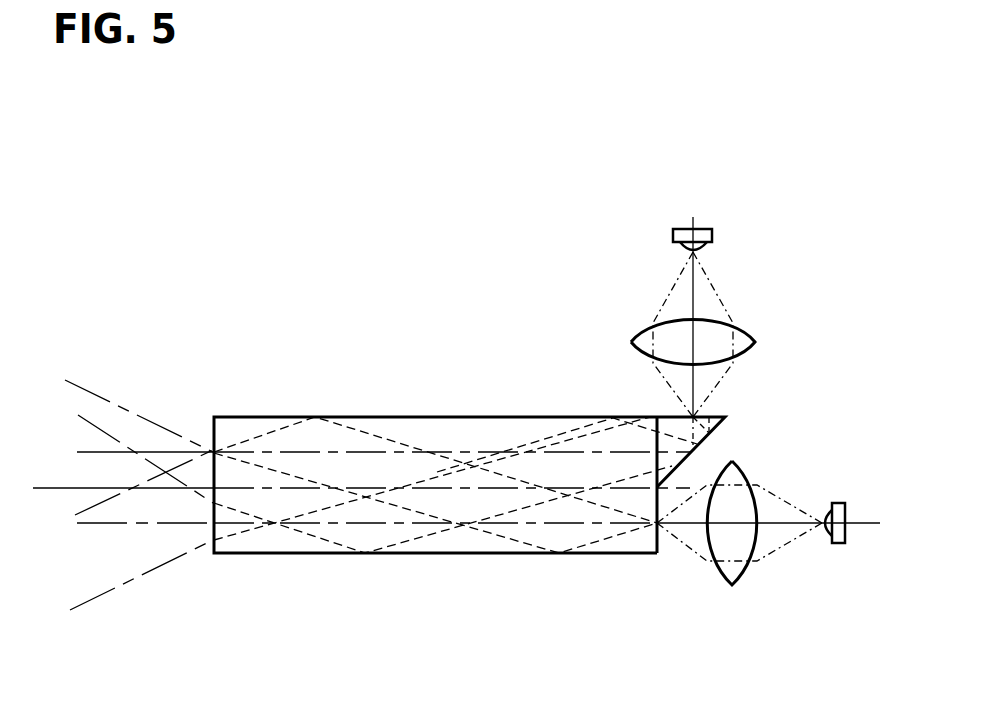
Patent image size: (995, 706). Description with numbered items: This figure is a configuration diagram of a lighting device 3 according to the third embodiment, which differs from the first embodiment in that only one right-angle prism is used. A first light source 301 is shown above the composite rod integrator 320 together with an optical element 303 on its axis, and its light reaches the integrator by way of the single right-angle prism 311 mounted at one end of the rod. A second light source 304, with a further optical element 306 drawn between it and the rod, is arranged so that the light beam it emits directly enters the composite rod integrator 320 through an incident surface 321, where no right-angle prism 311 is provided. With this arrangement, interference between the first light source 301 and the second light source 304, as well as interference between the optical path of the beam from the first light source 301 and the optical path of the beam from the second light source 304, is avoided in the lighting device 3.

The lighting device 3 is at (164, 211).
The first light source 301 is at (707, 233).
The collimating lens 303 is at (735, 345).
The right-angle prism 311 is at (725, 418).
The composite rod integrator 320 is at (458, 543).
The incident surface 321 is at (652, 467).
The condensing lens 306 is at (736, 578).
The second light source 304 is at (840, 538).